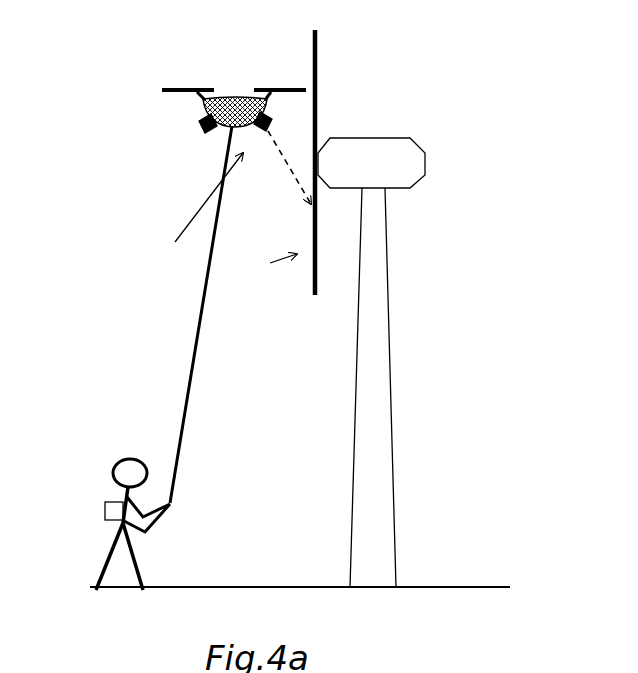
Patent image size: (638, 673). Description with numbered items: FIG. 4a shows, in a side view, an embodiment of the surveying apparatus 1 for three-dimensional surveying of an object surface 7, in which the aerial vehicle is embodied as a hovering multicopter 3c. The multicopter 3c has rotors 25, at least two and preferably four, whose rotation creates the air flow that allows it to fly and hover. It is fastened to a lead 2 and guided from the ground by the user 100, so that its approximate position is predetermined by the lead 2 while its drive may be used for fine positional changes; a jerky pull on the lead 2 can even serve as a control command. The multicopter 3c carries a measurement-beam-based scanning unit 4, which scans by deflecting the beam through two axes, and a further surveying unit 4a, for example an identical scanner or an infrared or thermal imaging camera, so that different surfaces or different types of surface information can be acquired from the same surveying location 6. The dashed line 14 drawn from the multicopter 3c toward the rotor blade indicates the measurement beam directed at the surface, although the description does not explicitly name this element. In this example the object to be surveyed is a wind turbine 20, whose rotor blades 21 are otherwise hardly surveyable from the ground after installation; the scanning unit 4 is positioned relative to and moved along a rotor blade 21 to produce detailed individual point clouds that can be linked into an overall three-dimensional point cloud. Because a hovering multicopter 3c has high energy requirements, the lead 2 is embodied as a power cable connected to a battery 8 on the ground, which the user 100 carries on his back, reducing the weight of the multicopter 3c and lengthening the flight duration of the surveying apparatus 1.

The surveying apparatus 1 is at (133, 52).
The rotors 25 is at (277, 90).
The multicopter 3c is at (203, 105).
The further surveying unit 4a is at (203, 127).
The scanning unit 4 is at (262, 130).
The surveying location 6 is at (175, 242).
The lead 2 is at (193, 347).
The signal 14 is at (284, 156).
The rotor blade 21 is at (317, 72).
The object surface 7 is at (271, 263).
The wind turbine 20 is at (383, 564).
The user 100 is at (113, 450).
The battery 8 is at (108, 506).